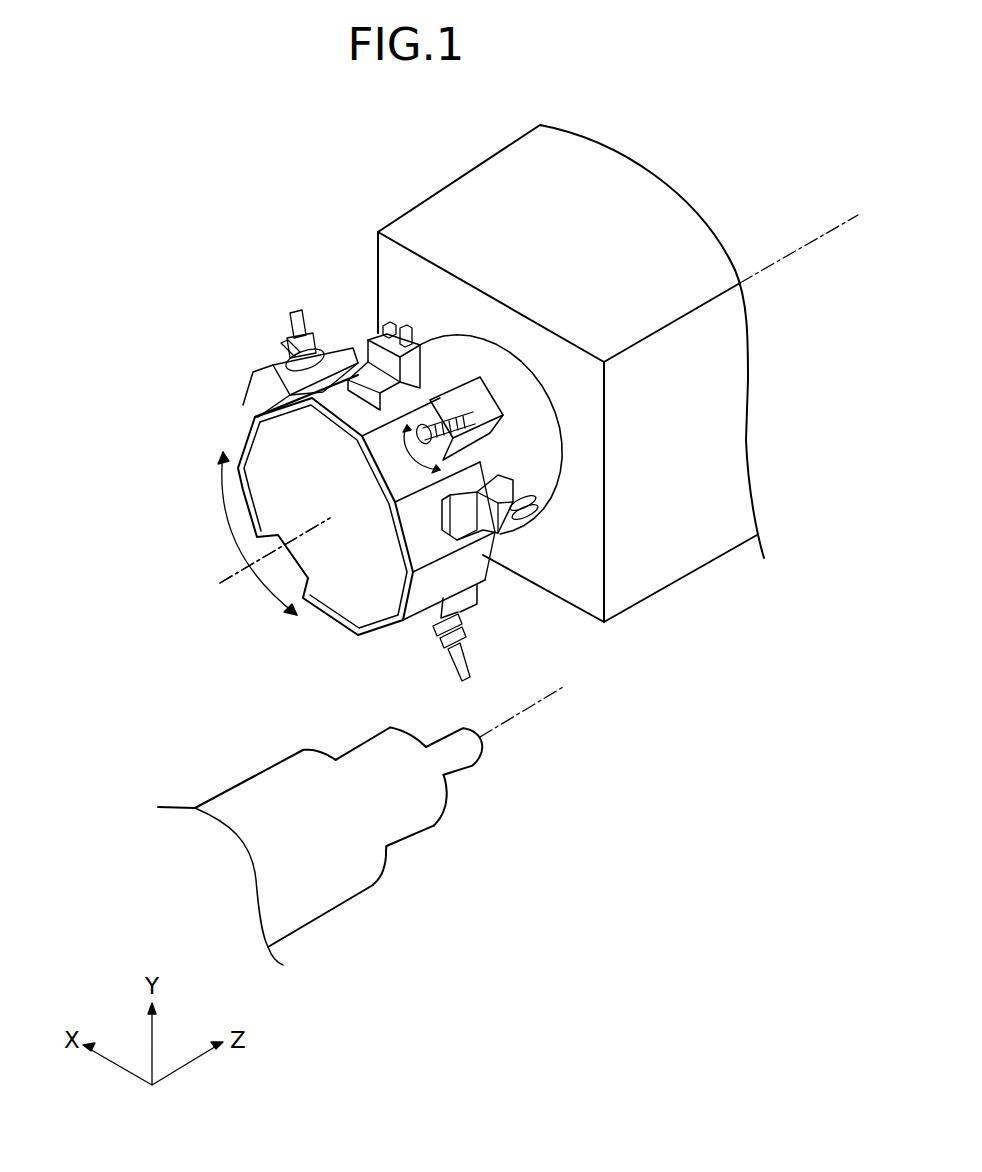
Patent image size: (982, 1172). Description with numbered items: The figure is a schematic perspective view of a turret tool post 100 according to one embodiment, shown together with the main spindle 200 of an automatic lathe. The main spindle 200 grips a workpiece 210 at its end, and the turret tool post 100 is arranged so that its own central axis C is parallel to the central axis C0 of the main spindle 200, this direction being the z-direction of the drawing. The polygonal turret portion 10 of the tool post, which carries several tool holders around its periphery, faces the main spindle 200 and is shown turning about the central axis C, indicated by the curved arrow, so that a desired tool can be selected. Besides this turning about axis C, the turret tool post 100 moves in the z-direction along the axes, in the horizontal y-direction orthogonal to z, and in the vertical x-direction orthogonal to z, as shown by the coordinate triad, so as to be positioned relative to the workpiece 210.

The turret tool post 100 is at (538, 412).
The turret 10 is at (467, 567).
The main spindle 200 is at (247, 777).
The workpiece 210 is at (466, 768).
The central axis C is at (237, 580).
The central axis of the main spindle C0 is at (547, 700).